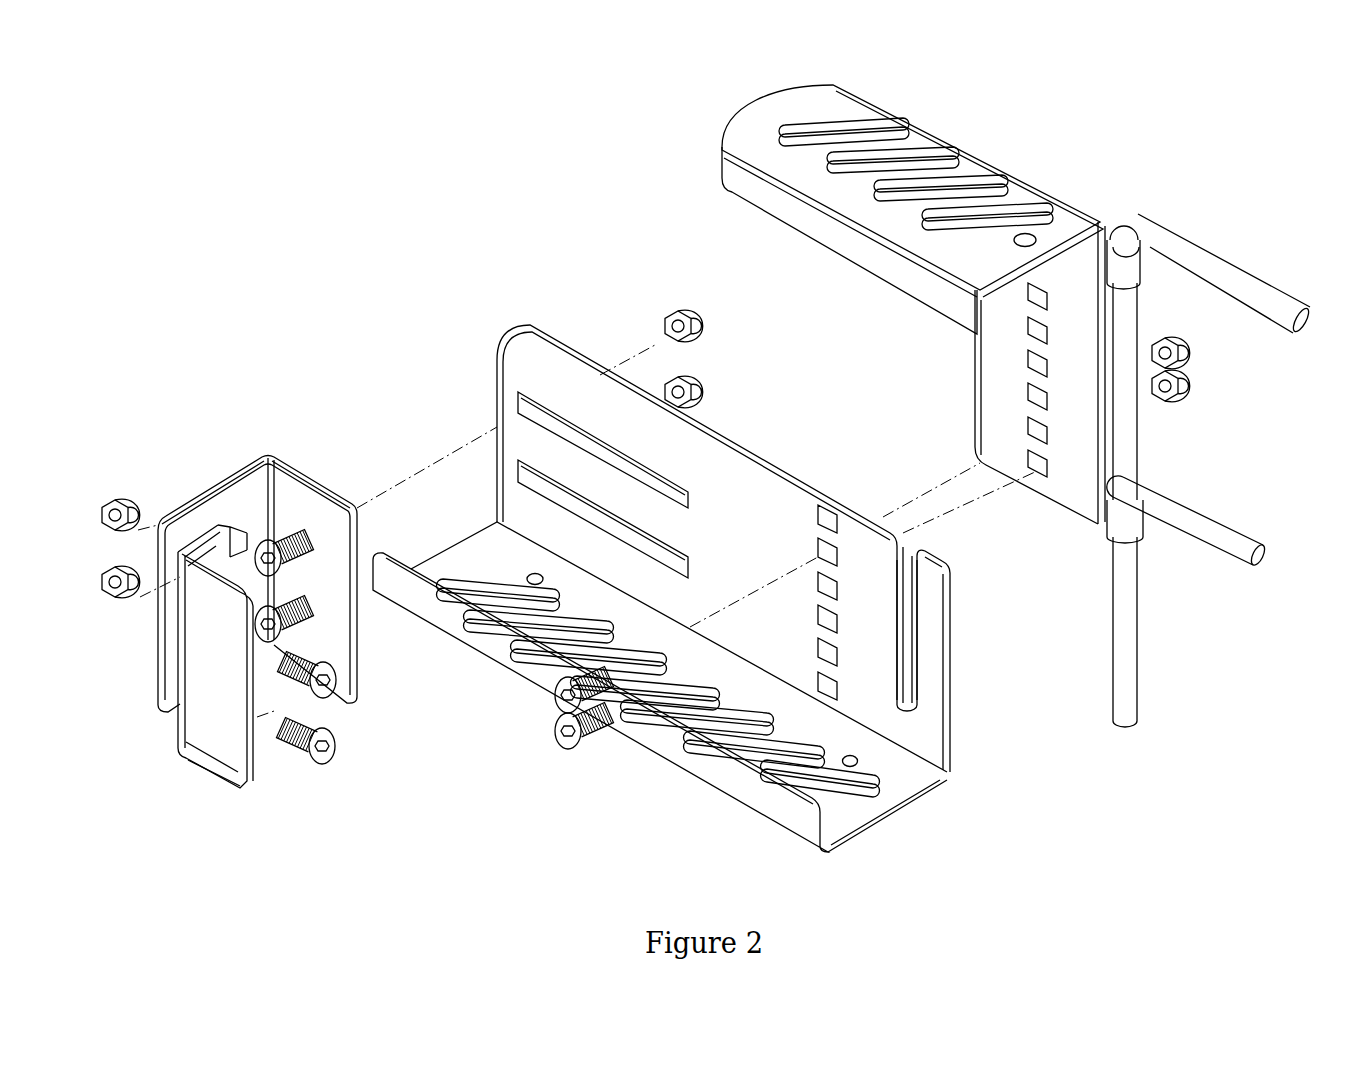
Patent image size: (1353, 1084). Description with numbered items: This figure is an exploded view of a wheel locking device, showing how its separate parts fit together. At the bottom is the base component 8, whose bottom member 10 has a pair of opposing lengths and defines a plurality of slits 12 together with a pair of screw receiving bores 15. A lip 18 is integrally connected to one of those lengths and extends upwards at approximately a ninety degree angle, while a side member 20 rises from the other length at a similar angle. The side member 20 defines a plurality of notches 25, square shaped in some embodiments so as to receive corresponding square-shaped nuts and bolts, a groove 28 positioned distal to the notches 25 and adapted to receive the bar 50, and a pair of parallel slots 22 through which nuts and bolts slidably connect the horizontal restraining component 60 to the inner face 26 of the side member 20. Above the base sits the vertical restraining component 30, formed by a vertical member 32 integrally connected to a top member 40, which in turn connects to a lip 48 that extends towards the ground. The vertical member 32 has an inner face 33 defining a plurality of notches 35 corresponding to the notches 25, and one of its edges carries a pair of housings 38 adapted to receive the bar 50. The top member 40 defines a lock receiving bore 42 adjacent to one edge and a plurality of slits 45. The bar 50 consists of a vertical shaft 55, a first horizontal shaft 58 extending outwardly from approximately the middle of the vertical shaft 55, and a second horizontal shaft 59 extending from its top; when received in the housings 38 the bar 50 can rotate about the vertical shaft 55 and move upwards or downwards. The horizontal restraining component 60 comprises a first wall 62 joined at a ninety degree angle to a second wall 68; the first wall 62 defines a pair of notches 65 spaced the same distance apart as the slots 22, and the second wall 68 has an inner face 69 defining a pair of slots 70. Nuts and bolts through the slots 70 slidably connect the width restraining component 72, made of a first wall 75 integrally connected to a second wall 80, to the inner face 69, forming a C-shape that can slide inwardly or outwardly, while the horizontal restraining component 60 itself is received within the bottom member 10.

The base component 8 is at (582, 375).
The bottom member 10 is at (690, 699).
The slits 12 is at (705, 722).
The screw receiving bores 15 is at (533, 580).
The lip 18 is at (530, 667).
The side member 20 is at (742, 506).
The slots 22 is at (680, 558).
The notches 25 is at (828, 518).
The inner face 26 is at (900, 557).
The groove 28 is at (903, 653).
The vertical restraining component 30 is at (894, 308).
The vertical member 32 is at (1004, 399).
The inner face 33 is at (988, 358).
The notches 35 is at (1044, 468).
The housings 38 is at (1132, 267).
The top member 40 is at (925, 168).
The lock receiving bore 42 is at (1028, 237).
The slits 45 is at (887, 132).
The lip 48 is at (825, 233).
The bar 50 is at (1145, 233).
The vertical shaft 55 is at (1128, 685).
The first horizontal shaft 58 is at (1202, 513).
The second horizontal shaft 59 is at (1227, 277).
The horizontal restraining component 60 is at (277, 544).
The first wall 62 is at (296, 490).
The notches 65 is at (292, 622).
The second wall 68 is at (244, 483).
The inner face 69 is at (205, 524).
The slots 70 is at (204, 633).
The width restraining component 72 is at (233, 750).
The first wall 75 is at (205, 732).
The second wall 80 is at (215, 556).